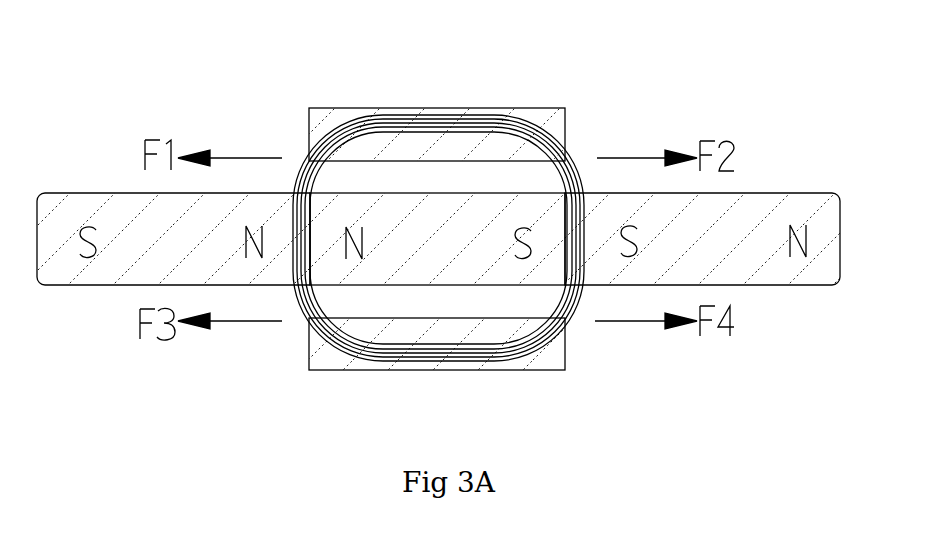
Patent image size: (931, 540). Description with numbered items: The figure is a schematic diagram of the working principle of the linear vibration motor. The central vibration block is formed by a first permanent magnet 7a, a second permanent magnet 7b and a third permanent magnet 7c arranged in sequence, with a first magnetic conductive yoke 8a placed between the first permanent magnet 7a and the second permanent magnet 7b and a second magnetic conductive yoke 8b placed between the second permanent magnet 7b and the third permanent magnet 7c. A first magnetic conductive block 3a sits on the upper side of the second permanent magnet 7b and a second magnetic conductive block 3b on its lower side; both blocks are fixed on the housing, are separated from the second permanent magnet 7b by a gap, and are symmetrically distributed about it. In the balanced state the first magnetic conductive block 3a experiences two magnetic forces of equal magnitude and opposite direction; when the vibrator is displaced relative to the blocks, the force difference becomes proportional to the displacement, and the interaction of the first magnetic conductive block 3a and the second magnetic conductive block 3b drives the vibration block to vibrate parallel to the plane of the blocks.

The first permanent magnet 7a is at (90, 193).
The second permanent magnet 7b is at (383, 195).
The third permanent magnet 7c is at (767, 193).
The first magnetic conductive yoke 8a is at (300, 195).
The second magnetic conductive yoke 8b is at (580, 192).
The first magnetic conductive block 3a is at (515, 112).
The second magnetic conductive block 3b is at (528, 362).